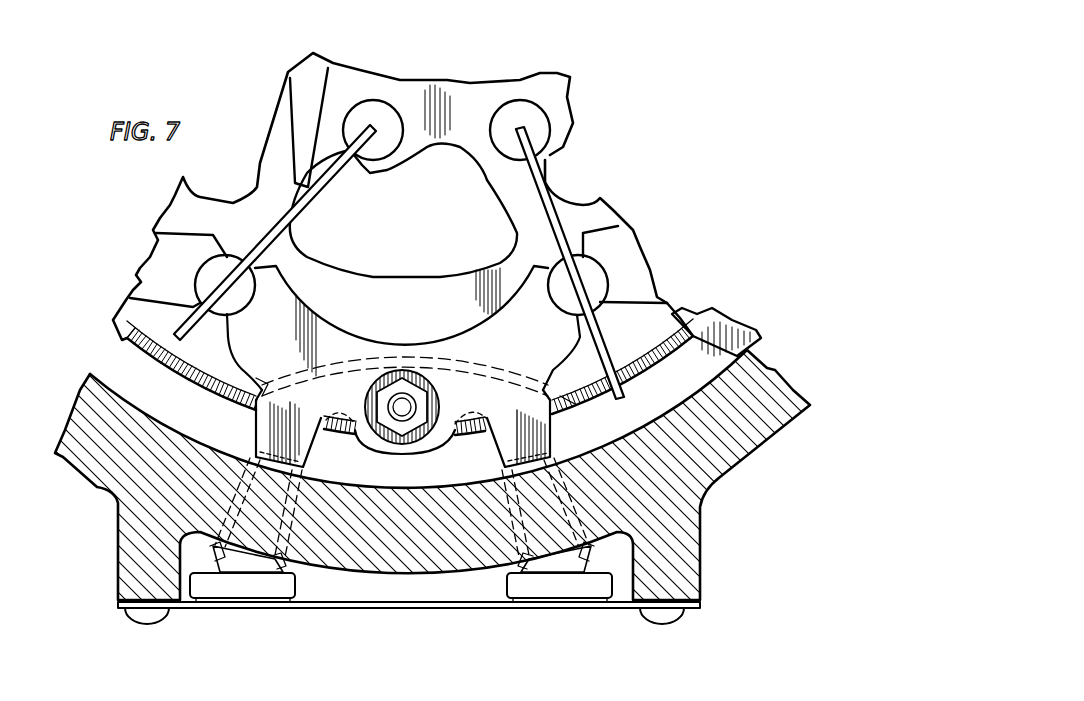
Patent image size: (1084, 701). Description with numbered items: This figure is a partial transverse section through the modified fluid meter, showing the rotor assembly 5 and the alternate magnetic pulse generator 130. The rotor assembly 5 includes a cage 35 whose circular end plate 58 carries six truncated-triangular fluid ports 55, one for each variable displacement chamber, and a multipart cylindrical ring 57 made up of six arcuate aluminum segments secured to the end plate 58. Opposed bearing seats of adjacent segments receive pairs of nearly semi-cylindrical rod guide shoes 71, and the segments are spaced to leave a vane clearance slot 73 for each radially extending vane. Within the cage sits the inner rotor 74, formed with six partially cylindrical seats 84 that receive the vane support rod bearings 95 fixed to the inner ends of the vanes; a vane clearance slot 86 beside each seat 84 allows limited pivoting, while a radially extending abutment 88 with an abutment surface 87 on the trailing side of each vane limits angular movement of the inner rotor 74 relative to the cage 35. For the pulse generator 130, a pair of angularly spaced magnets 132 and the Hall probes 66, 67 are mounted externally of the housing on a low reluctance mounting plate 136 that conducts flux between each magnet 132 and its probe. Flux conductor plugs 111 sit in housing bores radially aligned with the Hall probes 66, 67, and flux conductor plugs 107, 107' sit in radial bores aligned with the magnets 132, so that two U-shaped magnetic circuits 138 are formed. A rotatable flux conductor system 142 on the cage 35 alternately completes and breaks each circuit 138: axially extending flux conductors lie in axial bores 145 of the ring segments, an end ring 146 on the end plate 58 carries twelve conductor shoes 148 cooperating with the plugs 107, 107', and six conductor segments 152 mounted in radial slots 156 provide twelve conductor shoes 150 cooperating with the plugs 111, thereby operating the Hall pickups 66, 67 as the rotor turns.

The rotor assembly 5 is at (131, 304).
The magnetic pulse generator 130 is at (112, 373).
The rotatable flux conductor system 142 is at (573, 436).
The mounting plate 136 is at (393, 608).
The Hall probe 66 is at (283, 590).
The Hall probe 67 is at (520, 590).
The flux conductor plugs 111 is at (250, 563).
The magnets 132 is at (216, 566).
The flux conductor plugs 107 is at (286, 527).
The right shafts 107' is at (515, 527).
The U-shaped magnetic circuits 138 is at (226, 421).
The conductor shoes 148 is at (581, 385).
The end ring 146 is at (716, 325).
The conductor shoes 150 is at (300, 456).
The conductor segments 152 is at (262, 380).
The axial bores 145 is at (432, 388).
The radial slots 156 is at (455, 378).
The abutment 88 is at (307, 158).
The inner rotor 74 is at (463, 93).
The partially cylindrical seats 84 is at (385, 112).
The vane clearance slot 86 is at (364, 170).
The fluid ports 55 is at (416, 265).
The cage 35 is at (242, 351).
The rod guide shoes 71 is at (206, 270).
The vane clearance slot 73 is at (552, 262).
The end plate 58 is at (604, 218).
The cylindrical ring 57 is at (637, 313).
The vane support rod bearings 95 is at (374, 107).
The abutment surface 87 is at (538, 200).